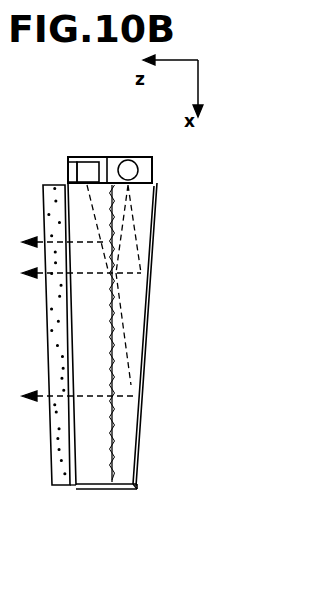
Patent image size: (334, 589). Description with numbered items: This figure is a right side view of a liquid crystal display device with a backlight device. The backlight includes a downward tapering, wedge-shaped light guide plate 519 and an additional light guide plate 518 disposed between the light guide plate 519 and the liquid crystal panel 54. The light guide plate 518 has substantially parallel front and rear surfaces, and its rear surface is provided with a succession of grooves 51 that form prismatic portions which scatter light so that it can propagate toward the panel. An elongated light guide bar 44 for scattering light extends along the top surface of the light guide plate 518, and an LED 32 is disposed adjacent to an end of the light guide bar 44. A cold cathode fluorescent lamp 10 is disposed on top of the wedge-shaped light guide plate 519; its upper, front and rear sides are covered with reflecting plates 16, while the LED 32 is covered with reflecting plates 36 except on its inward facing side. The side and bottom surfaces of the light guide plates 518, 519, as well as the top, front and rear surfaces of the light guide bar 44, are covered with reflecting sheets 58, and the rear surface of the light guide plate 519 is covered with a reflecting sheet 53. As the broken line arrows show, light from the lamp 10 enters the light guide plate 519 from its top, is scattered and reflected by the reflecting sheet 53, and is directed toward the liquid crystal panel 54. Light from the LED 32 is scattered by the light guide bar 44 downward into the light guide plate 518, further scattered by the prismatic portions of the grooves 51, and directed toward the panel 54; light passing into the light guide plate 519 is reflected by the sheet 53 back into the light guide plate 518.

The cold cathode fluorescent lamp 10 is at (124, 164).
The reflecting plates 16 is at (113, 157).
The LED 32 is at (90, 170).
The reflecting plates 36 is at (68, 157).
The light guide bar 44 is at (74, 178).
The grooves 51 is at (112, 475).
The reflecting sheet 53 is at (138, 418).
The liquid crystal panel 54 is at (52, 462).
The reflecting sheets 58 is at (108, 488).
The light guide plate 518 is at (80, 480).
The light guide plate 519 is at (131, 487).